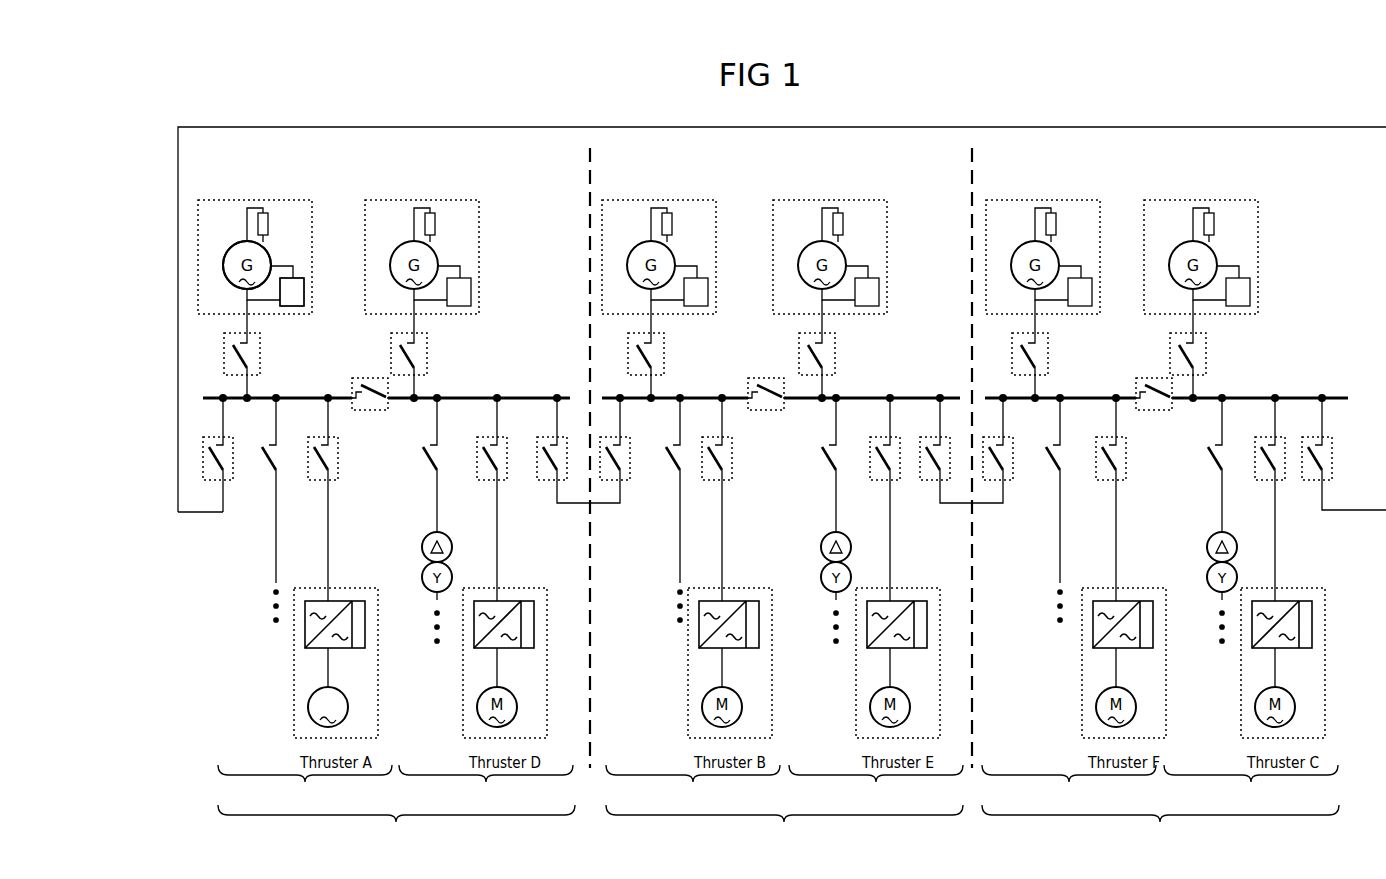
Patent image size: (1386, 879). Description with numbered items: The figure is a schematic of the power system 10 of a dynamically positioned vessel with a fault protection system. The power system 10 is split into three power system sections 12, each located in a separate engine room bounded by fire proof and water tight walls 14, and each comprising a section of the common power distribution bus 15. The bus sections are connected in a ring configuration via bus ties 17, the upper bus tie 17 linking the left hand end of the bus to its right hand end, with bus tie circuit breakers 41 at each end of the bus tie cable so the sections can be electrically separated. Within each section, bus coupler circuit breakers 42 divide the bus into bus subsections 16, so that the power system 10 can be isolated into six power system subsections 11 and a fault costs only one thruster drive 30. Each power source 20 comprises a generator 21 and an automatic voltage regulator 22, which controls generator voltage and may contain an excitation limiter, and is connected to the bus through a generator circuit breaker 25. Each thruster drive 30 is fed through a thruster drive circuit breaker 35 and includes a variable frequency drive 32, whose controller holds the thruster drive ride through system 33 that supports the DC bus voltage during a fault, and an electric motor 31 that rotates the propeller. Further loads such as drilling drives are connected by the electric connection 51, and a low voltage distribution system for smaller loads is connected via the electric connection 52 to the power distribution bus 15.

The power system 10 is at (199, 99).
The power system subsection 11 is at (778, 784).
The power system section 12 is at (778, 825).
The fire proof and water tight wall 14 is at (590, 725).
The power distribution bus 15 is at (170, 377).
The bus subsection 16 is at (308, 396).
The bus tie 17 is at (413, 126).
The power source 20 is at (736, 232).
The generator 21 is at (268, 256).
The automatic voltage regulator 22 is at (304, 293).
The generator circuit breaker 25 is at (260, 352).
The thruster drive 30 is at (328, 604).
The electric motor 31 is at (308, 713).
The variable frequency drive 32 is at (304, 641).
The thruster drive ride through system 33 is at (362, 650).
The thruster drive circuit breaker 35 is at (315, 484).
The bus tie circuit breaker 41 is at (228, 482).
The bus coupler circuit breaker 42 is at (372, 412).
The electric connection 51 is at (275, 560).
The electric connection 52 is at (436, 514).